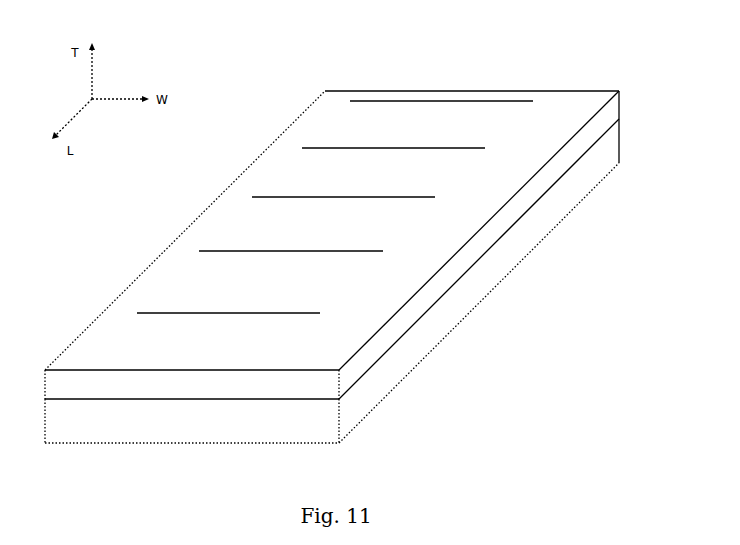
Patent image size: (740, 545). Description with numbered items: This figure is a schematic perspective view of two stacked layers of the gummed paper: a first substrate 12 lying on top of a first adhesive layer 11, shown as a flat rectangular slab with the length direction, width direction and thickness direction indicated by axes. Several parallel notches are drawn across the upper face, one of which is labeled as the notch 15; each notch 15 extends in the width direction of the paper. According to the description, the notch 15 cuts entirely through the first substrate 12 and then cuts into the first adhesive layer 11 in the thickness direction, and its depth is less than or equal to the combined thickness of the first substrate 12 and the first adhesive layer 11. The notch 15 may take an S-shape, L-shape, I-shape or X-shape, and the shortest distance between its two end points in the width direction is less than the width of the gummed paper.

The first adhesive layer 11 is at (390, 382).
The first substrate 12 is at (450, 268).
The notch 15 is at (505, 98).